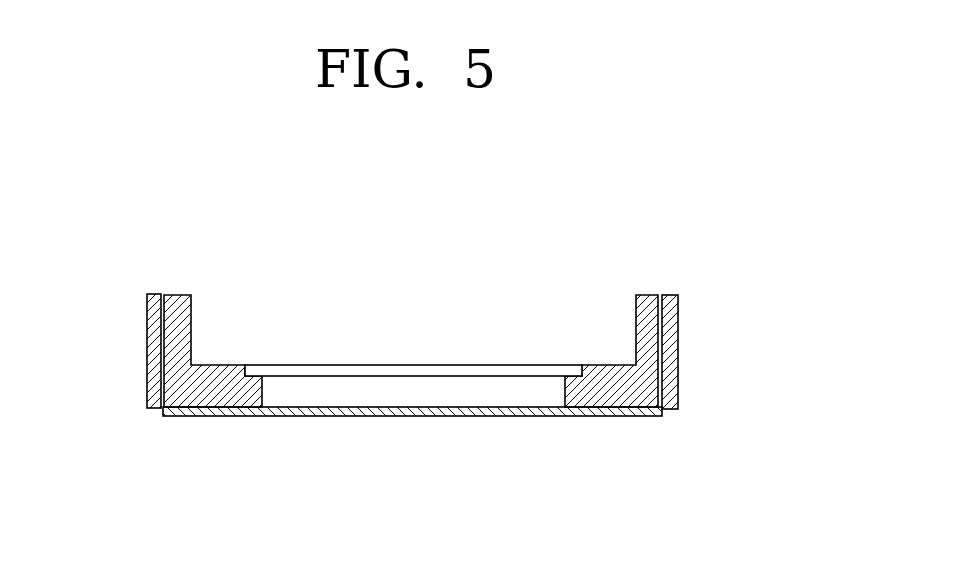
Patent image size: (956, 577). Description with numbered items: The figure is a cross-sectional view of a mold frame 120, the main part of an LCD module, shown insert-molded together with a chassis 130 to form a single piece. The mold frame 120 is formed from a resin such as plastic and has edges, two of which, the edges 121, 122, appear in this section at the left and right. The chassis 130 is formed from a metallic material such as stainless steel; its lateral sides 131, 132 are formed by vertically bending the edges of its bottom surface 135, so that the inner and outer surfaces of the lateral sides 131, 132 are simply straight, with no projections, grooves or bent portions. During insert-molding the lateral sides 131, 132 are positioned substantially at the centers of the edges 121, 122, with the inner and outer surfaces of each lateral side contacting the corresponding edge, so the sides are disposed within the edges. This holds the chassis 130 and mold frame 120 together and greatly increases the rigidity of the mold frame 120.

The mold frame 120 is at (418, 386).
The edge of mold frame 121 is at (157, 350).
The edge of mold frame 122 is at (680, 340).
The chassis 130 is at (512, 426).
The lateral side of chassis 131 is at (160, 318).
The lateral side of chassis 132 is at (663, 311).
The bottom surface 135 is at (388, 417).